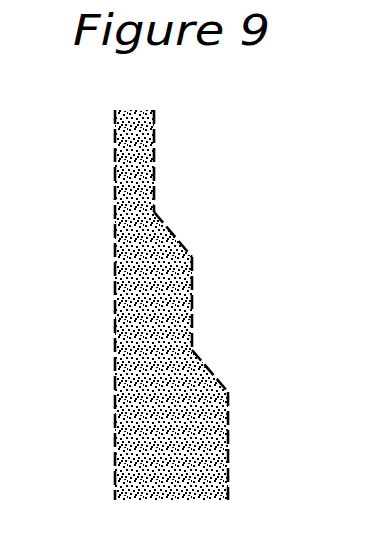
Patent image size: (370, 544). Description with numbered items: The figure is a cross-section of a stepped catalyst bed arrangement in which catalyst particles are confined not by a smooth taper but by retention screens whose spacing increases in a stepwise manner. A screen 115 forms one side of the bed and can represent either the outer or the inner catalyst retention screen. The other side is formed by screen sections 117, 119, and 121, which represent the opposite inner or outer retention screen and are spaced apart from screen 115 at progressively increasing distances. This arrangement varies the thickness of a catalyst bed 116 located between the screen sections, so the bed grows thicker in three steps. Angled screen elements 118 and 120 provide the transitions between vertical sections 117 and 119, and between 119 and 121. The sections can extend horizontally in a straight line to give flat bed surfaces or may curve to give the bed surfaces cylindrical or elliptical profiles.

The screen 115 is at (137, 305).
The catalyst bed 116 is at (119, 397).
The screen section 117 is at (204, 161).
The angled screen element 118 is at (210, 230).
The screen section 119 is at (235, 303).
The angled screen element 120 is at (242, 369).
The screen section 121 is at (268, 446).